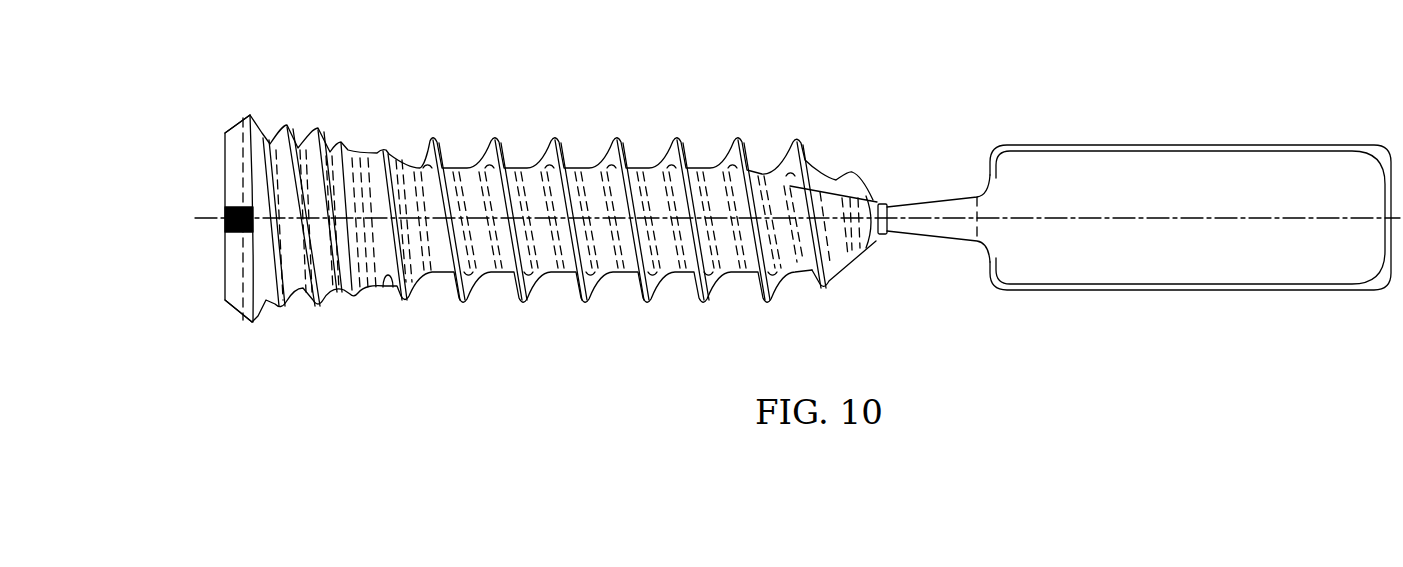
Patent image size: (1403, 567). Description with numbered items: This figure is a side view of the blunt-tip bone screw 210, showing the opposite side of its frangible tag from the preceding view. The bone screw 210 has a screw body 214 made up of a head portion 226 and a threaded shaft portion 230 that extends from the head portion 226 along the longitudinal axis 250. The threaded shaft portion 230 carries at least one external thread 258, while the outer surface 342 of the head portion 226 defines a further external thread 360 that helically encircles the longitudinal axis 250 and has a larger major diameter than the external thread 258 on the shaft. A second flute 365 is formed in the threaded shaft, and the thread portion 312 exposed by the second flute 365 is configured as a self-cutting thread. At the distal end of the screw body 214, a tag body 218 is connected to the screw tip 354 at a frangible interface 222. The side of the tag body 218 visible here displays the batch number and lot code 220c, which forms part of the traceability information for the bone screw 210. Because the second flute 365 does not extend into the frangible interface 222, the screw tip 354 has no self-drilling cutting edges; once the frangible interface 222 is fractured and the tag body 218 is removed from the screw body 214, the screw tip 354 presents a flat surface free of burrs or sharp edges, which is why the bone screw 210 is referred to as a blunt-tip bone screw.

The bone screw 210 is at (315, 44).
The screw body 214 is at (545, 84).
The tag body 218 is at (1216, 80).
The lot code 220c is at (1277, 280).
The frangible interface 222 is at (884, 235).
The head portion 226 is at (254, 331).
The threaded shaft portion 230 is at (553, 285).
The longitudinal axis 250 is at (208, 210).
The external thread 258 is at (618, 136).
The thread portion 312 is at (830, 140).
The outer surface 342 is at (298, 318).
The screw tip 354 is at (888, 181).
The further external thread 360 is at (300, 116).
The second flute 365 is at (800, 284).